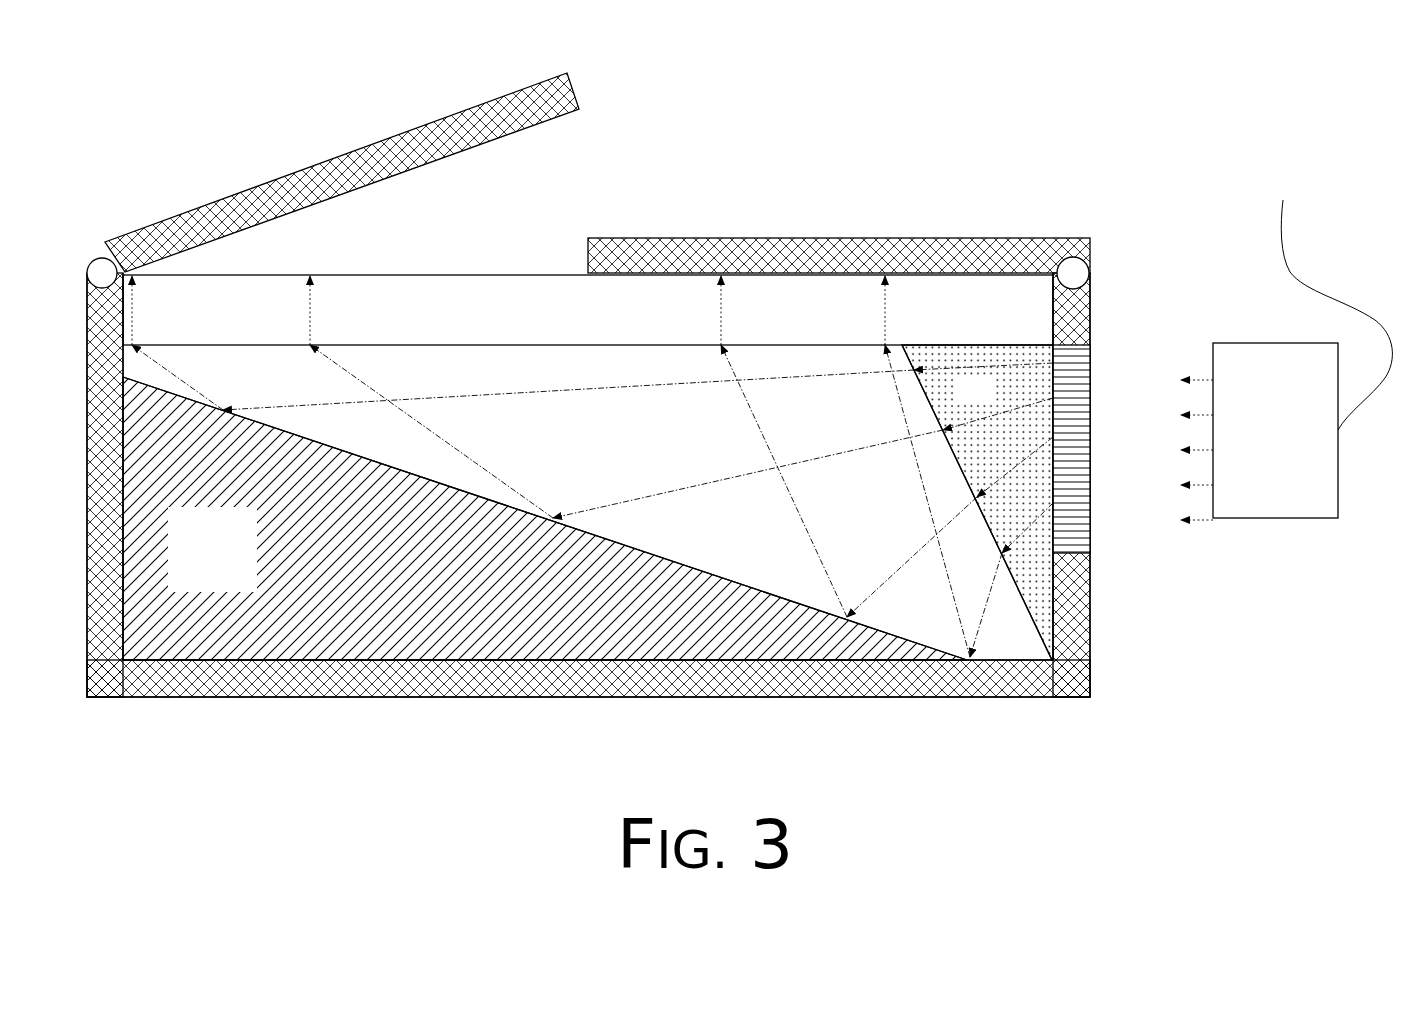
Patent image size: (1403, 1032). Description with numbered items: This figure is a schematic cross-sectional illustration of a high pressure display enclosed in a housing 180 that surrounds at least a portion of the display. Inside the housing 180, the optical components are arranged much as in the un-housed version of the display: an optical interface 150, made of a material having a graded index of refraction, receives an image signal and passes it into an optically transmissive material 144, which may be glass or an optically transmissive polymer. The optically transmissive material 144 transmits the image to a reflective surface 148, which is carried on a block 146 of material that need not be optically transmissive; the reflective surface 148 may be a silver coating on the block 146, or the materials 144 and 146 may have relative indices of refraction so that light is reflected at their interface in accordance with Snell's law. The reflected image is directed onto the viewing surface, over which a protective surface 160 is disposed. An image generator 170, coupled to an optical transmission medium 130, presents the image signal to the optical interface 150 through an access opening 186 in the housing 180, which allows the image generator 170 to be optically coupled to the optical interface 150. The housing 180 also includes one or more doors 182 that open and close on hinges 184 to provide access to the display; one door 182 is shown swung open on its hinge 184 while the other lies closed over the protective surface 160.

The optical transmission medium 130 is at (1282, 240).
The optically transmissive material 144 is at (592, 501).
The block 146 is at (545, 518).
The reflective surface 148 is at (457, 488).
The optical interface 150 is at (977, 502).
The protective surface 160 is at (588, 310).
The image generator 170 is at (1259, 431).
The housing 180 is at (1090, 697).
The doors 182 is at (352, 152).
The hinges 184 is at (103, 272).
The access opening 186 is at (1092, 365).